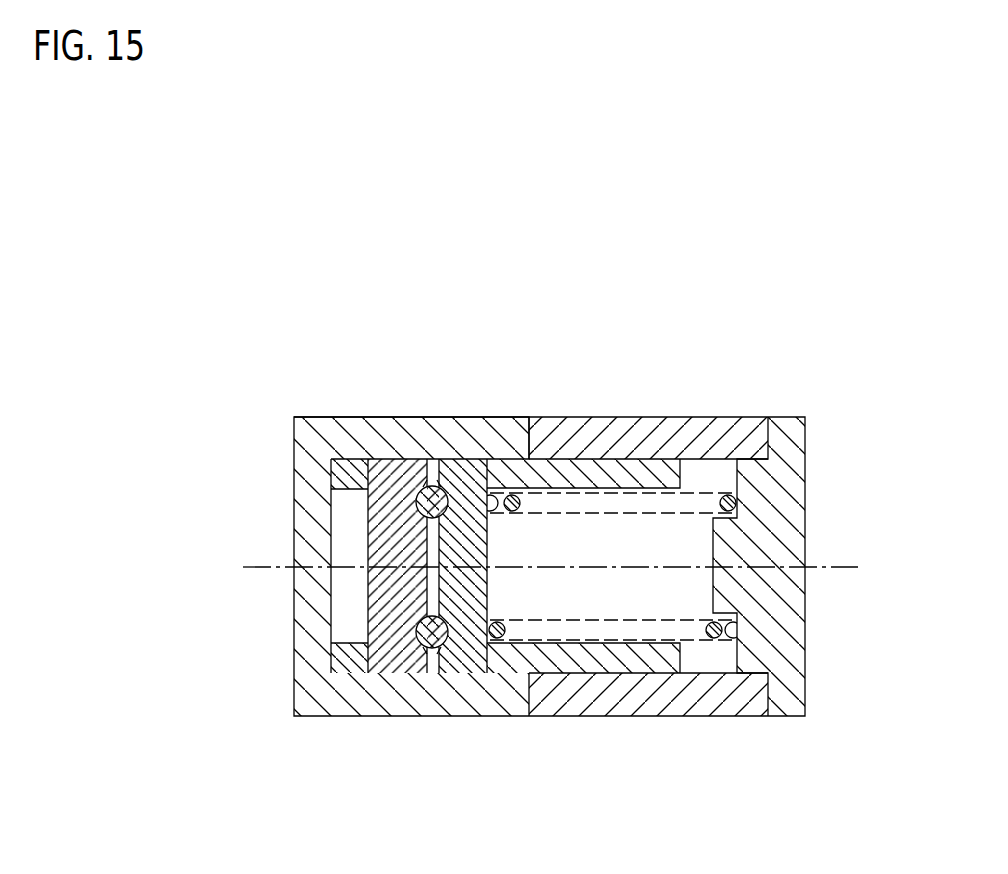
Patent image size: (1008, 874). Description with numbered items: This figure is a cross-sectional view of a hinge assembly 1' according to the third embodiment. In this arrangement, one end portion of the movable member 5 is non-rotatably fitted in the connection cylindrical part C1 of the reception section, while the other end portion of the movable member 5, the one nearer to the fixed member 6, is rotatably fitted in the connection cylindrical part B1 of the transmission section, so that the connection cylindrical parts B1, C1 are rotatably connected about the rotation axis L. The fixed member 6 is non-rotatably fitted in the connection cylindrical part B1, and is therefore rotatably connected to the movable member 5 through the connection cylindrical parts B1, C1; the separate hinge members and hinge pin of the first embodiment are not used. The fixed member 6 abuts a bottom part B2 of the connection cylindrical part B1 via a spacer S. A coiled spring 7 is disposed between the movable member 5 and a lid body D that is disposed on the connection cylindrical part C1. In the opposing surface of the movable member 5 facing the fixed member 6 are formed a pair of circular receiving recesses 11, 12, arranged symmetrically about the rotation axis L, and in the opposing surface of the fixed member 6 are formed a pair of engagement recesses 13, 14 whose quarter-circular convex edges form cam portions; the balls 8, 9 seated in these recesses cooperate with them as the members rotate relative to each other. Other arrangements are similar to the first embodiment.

The hinge assembly 1' is at (556, 497).
The movable member 5 is at (600, 465).
The fixed member 6 is at (387, 656).
The coiled spring 7 is at (708, 640).
The upper check ball 8 is at (437, 487).
The lower check ball 9 is at (432, 640).
The receiving recess 11 is at (437, 495).
The receiving recess 12 is at (443, 645).
The engagement recess 13 is at (427, 483).
The engagement recess 14 is at (420, 645).
The connection cylindrical part B1 is at (352, 417).
The bottom part B2 is at (294, 517).
The connection cylindrical part C1 is at (707, 417).
The lid body D is at (803, 650).
The rotation axis L is at (842, 566).
The spacer S is at (343, 668).